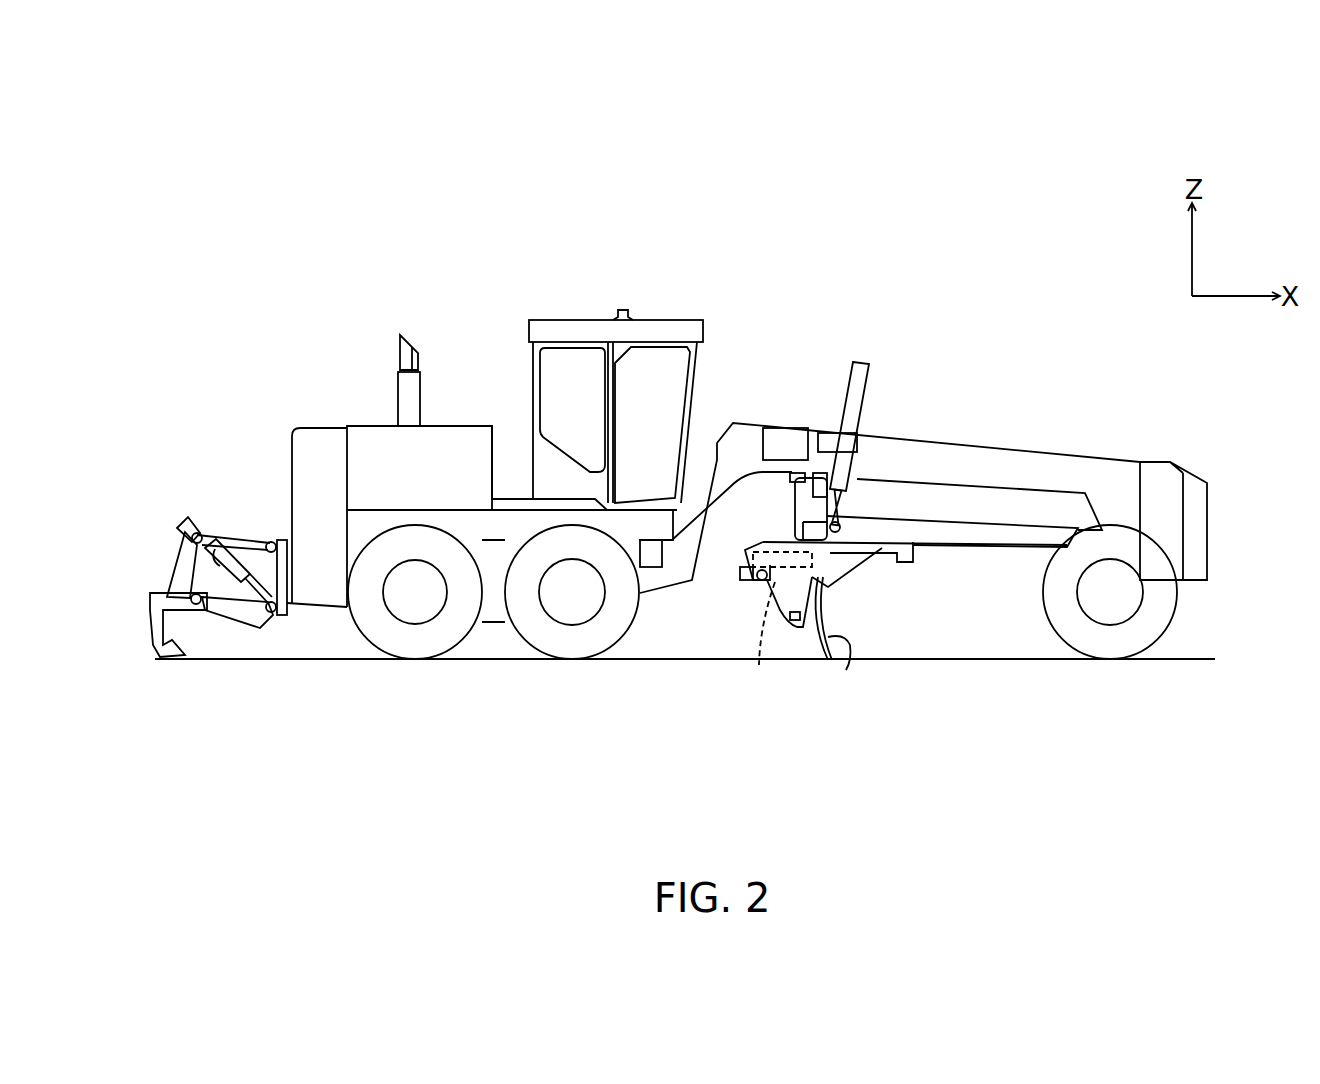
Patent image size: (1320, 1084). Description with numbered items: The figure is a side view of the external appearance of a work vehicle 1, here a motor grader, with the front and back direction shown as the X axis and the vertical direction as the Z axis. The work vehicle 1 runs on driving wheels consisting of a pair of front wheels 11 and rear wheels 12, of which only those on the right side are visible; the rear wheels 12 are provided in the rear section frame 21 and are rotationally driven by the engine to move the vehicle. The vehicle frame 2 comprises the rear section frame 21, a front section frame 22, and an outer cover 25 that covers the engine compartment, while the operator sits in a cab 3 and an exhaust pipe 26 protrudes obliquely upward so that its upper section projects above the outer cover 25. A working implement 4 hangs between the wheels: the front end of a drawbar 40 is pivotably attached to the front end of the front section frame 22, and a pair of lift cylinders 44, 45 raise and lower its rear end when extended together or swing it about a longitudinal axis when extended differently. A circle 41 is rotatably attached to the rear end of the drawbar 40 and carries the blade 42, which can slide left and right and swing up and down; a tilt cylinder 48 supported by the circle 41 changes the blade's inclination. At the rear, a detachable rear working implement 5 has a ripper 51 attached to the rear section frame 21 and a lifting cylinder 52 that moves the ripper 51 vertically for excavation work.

The work vehicle 1 is at (972, 310).
The vehicle frame 2 is at (749, 395).
The cab 3 is at (562, 323).
The working implement 4 is at (882, 638).
The rear working implement 5 is at (240, 507).
The front wheels 11 is at (1117, 652).
The rear wheels 12 is at (420, 643).
The rear section frame 21 is at (330, 595).
The front section frame 22 is at (1012, 463).
The outer cover 25 is at (434, 460).
The exhaust pipe 26 is at (411, 346).
The drawbar 40 is at (1010, 545).
The circle 41 is at (902, 563).
The blade 42 is at (848, 662).
The lift cylinder 44 is at (847, 401).
The lift cylinder 45 is at (853, 375).
The tilt cylinder 48 is at (760, 665).
The ripper 51 is at (162, 660).
The lifting cylinder 52 is at (188, 520).